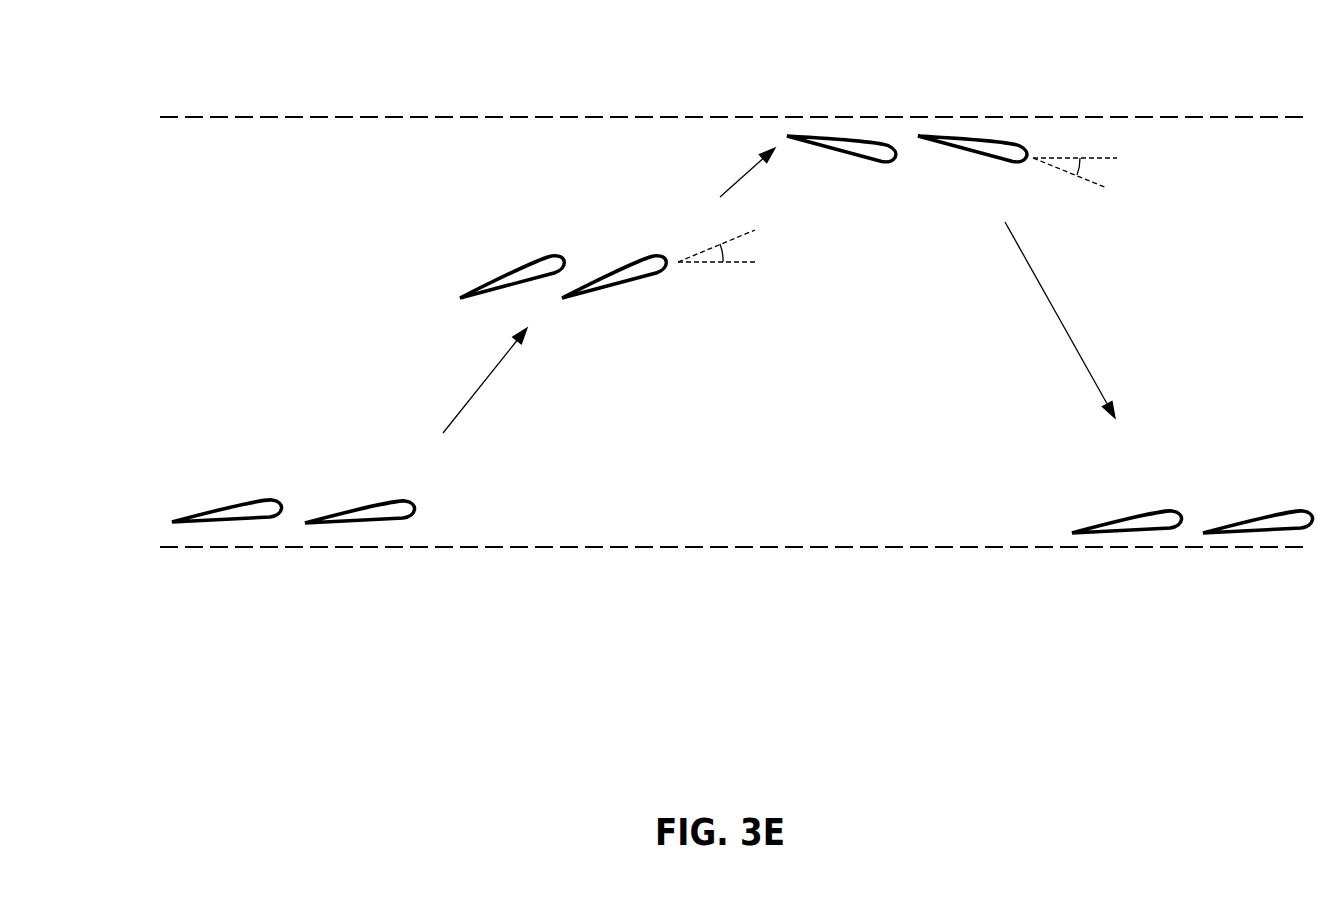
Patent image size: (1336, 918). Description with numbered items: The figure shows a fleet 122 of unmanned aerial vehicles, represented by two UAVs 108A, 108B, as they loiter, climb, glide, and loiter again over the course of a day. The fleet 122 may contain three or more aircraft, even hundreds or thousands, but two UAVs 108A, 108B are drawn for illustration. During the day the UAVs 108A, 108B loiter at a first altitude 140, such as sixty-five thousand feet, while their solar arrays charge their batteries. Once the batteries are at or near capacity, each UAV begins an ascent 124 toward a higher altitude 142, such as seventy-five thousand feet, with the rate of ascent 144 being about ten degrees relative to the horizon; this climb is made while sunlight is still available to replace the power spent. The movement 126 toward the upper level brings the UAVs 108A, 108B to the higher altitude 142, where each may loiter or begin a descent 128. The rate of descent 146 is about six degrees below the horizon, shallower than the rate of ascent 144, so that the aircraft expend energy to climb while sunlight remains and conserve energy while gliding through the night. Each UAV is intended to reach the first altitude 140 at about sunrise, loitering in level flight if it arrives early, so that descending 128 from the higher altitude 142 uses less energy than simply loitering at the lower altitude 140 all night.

The UAV 108A is at (228, 500).
The UAV 108B is at (365, 498).
The fleet 122 is at (240, 399).
The ascent 124 is at (478, 398).
The movement direction toward upper boundary 126 is at (742, 177).
The descent 128 is at (1063, 323).
The first altitude 140 is at (835, 547).
The higher altitude 142 is at (1225, 117).
The rate of ascent 144 is at (724, 253).
The rate of descent 146 is at (1082, 167).